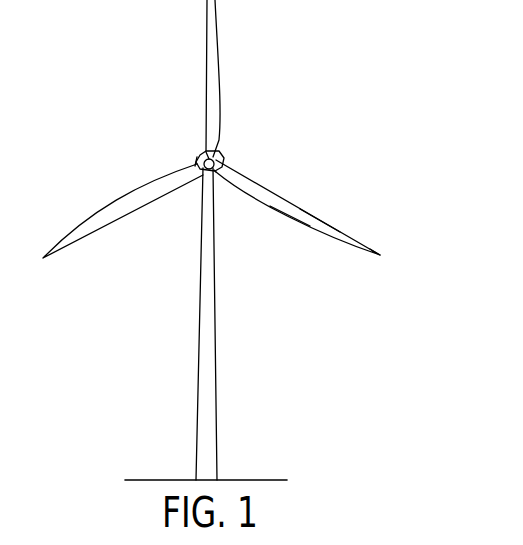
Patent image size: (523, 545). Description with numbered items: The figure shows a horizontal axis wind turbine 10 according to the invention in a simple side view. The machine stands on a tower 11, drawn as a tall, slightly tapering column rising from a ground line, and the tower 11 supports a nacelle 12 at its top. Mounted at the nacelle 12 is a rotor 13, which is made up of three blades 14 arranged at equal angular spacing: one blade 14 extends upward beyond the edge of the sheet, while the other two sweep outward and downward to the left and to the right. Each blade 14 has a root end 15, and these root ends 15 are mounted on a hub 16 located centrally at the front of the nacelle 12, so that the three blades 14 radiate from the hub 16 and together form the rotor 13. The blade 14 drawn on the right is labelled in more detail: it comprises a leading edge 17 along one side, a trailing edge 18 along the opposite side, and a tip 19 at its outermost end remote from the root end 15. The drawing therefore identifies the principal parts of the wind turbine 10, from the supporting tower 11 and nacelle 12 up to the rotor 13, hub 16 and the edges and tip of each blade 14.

The horizontal axis wind turbine 10 is at (117, 292).
The tower 11 is at (208, 388).
The nacelle 12 is at (220, 157).
The rotor 13 is at (312, 90).
The blade 14 is at (212, 57).
The root end 15 is at (186, 170).
The hub 16 is at (215, 175).
The leading edge 17 is at (327, 223).
The trailing edge 18 is at (292, 219).
The tip 19 is at (380, 255).